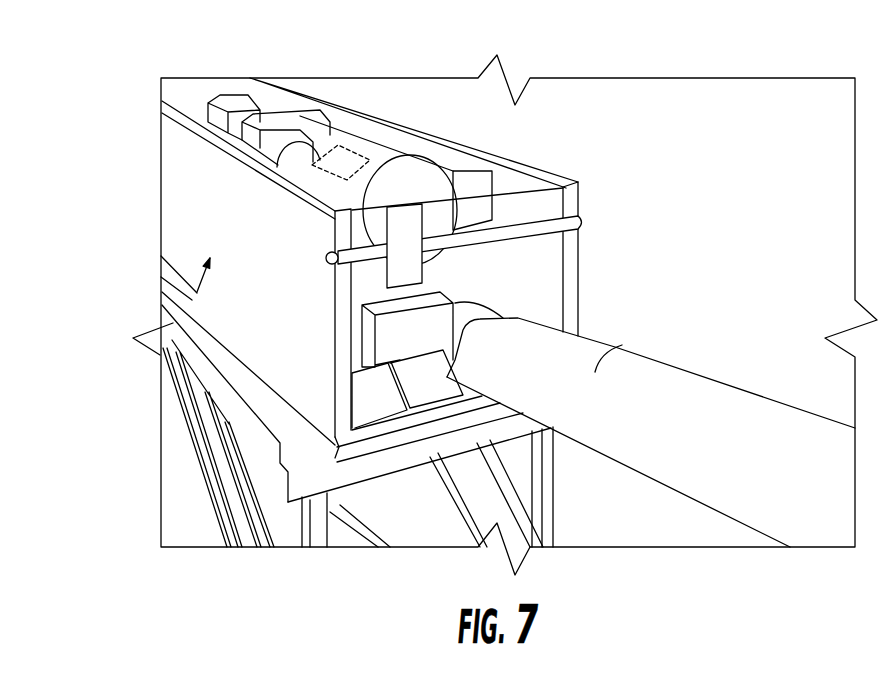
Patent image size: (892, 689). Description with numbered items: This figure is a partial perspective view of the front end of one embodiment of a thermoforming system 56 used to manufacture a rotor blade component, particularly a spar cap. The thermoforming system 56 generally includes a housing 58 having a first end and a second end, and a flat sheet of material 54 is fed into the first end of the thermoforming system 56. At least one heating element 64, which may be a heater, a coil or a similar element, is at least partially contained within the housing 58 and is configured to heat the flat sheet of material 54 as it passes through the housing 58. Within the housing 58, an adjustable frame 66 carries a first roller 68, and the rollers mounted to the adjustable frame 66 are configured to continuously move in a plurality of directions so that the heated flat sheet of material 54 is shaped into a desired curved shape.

The flat sheet of material 54 is at (593, 372).
The thermoforming system 56 is at (127, 213).
The housing 58 is at (198, 300).
The heating element 64 is at (315, 160).
The adjustable frame 66 is at (432, 247).
The first roller 68 is at (355, 145).